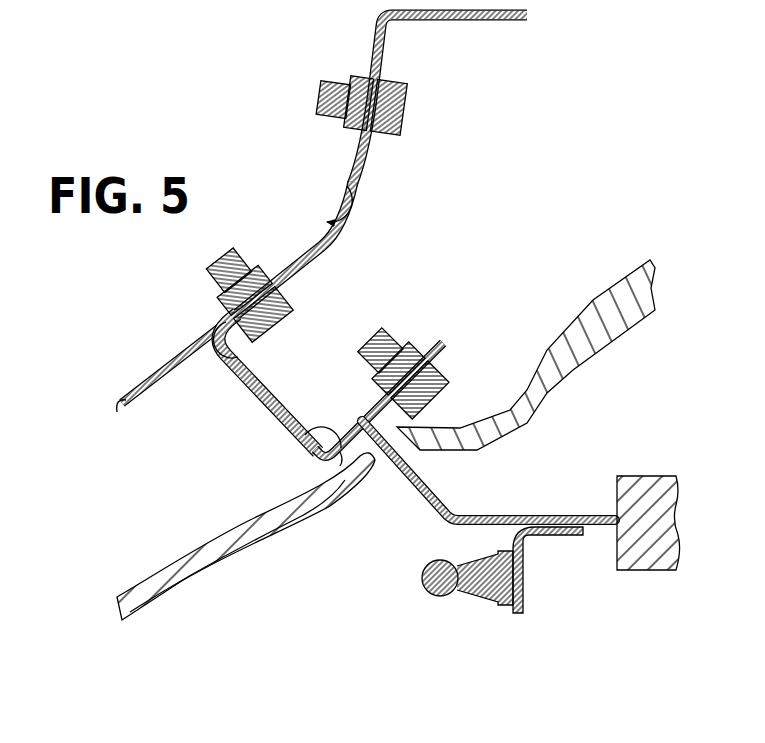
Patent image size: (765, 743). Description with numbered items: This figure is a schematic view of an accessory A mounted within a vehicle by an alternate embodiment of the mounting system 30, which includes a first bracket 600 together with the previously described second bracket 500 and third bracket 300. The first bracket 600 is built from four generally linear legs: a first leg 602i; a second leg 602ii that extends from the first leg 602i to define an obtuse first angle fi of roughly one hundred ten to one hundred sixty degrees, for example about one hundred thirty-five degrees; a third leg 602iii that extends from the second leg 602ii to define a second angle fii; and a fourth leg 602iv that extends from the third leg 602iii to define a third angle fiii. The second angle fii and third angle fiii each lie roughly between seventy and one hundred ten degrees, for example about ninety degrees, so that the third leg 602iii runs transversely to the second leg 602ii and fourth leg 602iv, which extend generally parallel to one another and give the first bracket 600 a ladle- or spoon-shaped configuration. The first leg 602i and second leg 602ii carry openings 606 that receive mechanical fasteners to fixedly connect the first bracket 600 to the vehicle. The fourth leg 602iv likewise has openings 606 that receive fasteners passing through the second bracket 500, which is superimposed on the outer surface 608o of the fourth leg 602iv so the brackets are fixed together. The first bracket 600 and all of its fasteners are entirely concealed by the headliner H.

The openings 606 is at (350, 92).
The first leg 602i is at (388, 66).
The second leg 602ii is at (332, 247).
The third leg 602iii is at (229, 383).
The fourth leg 602iv is at (372, 388).
The first angle fi is at (347, 186).
The second angle fii is at (238, 354).
The third angle fiii is at (306, 435).
The first bracket 600 is at (418, 188).
The mounting system 30 is at (520, 210).
The second bracket 500 is at (405, 507).
The accessory A is at (642, 475).
The third bracket 300 is at (560, 577).
The outer surface 608o is at (340, 452).
The headliner H is at (210, 571).